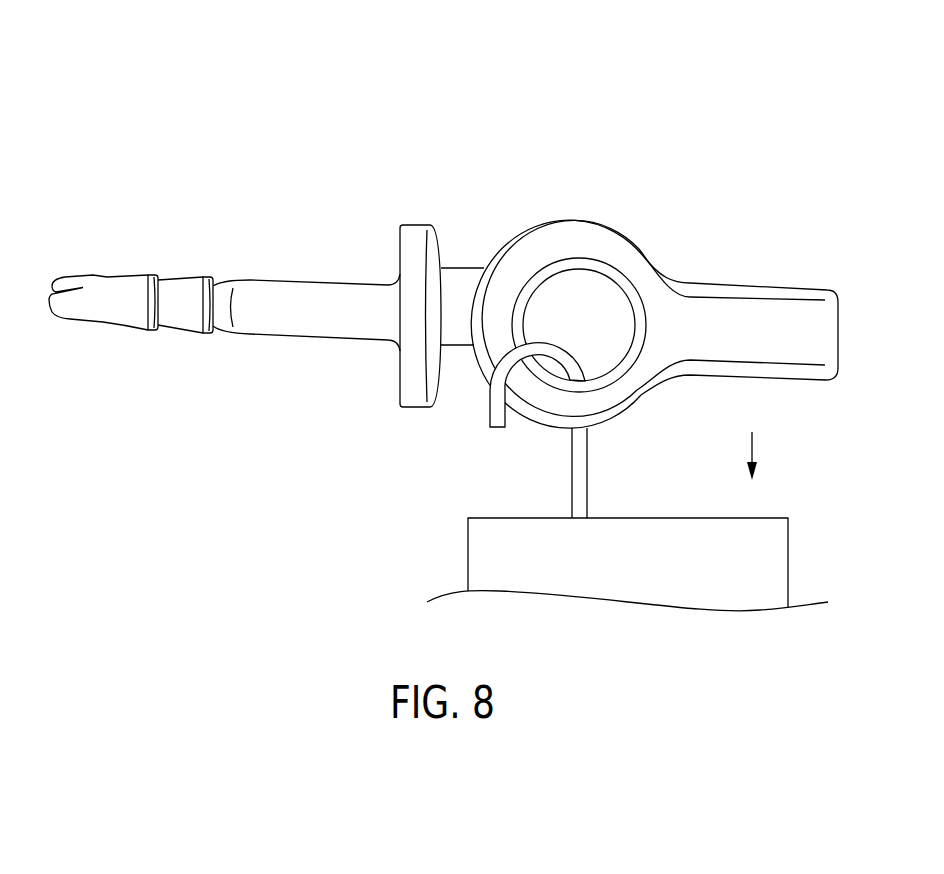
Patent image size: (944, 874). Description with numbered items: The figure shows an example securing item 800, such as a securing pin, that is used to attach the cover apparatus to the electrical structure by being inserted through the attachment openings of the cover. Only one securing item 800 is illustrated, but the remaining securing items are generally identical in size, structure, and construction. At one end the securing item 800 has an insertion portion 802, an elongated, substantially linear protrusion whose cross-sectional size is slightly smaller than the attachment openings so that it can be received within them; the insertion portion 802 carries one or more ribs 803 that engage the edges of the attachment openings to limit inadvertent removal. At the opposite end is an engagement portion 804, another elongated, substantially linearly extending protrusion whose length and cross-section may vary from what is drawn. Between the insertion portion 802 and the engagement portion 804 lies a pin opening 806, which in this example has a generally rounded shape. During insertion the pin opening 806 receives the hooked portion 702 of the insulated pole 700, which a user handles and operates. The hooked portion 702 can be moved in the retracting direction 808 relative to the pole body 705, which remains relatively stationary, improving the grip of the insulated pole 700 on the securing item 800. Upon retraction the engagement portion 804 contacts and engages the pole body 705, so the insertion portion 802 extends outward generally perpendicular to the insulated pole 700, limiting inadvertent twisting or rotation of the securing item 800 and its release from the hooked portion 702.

The securing item 800 is at (443, 223).
The insertion portion 802 is at (298, 340).
The ribs 803 is at (187, 278).
The engagement portion 804 is at (803, 287).
The pin opening 806 is at (583, 270).
The retracting direction 808 is at (753, 443).
The insulated pole 700 is at (582, 519).
The hooked portion 702 is at (588, 475).
The pole body 705 is at (790, 564).